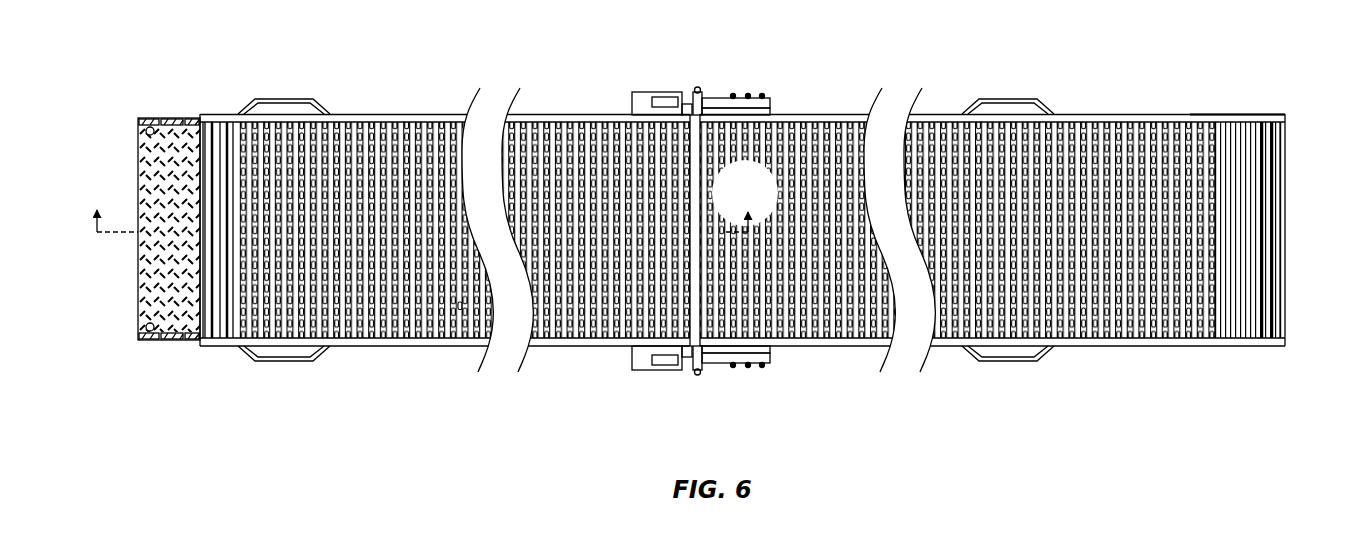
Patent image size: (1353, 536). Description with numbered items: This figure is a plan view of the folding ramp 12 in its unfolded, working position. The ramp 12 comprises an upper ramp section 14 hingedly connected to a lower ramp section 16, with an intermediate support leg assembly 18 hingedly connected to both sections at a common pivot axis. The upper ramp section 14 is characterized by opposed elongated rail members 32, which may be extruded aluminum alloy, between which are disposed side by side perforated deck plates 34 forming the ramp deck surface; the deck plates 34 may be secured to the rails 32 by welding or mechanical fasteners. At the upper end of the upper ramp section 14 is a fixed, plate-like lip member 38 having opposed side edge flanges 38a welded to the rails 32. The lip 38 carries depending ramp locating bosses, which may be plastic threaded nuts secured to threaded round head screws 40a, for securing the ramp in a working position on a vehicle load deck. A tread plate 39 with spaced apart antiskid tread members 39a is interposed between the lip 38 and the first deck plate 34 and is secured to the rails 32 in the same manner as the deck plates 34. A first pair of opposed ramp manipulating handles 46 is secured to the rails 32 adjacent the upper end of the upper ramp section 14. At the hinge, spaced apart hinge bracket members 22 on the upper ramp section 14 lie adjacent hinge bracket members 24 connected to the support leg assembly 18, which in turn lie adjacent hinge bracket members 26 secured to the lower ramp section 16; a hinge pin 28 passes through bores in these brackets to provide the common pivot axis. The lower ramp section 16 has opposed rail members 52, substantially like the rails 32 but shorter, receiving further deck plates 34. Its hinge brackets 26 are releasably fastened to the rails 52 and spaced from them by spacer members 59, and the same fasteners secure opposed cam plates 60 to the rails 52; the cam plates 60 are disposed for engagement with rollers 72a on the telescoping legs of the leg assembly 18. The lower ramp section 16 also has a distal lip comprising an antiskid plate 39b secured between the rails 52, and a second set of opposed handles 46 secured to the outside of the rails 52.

The folding ramp 12 is at (710, 229).
The upper ramp section 14 is at (370, 112).
The lower ramp section 16 is at (1096, 112).
The intermediate support leg assembly 18 is at (710, 231).
The hinge bracket members 22 is at (668, 117).
The hinge bracket members 24 is at (686, 104).
The hinge bracket members 26 is at (716, 102).
The hinge pin 28 is at (699, 91).
The rail members 32 is at (444, 113).
The perforated deck plates 34 is at (460, 306).
The lip member 38 is at (143, 285).
The side edge flanges 38a is at (168, 118).
The tread plate 39 is at (205, 330).
The antiskid tread members 39a is at (214, 150).
The antiskid plate 39b is at (1255, 342).
The round head screws 40a is at (146, 130).
The ramp manipulating handles 46 is at (294, 99).
The rail members 52 is at (1200, 114).
The spacer members 59 is at (771, 108).
The cam plates 60 is at (765, 98).
The rollers 72a is at (670, 98).